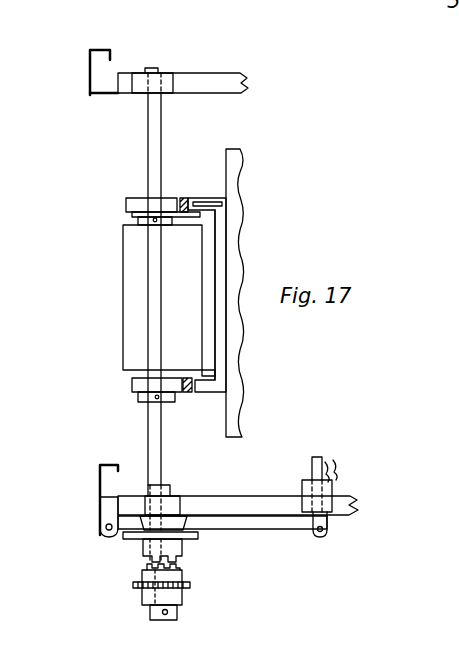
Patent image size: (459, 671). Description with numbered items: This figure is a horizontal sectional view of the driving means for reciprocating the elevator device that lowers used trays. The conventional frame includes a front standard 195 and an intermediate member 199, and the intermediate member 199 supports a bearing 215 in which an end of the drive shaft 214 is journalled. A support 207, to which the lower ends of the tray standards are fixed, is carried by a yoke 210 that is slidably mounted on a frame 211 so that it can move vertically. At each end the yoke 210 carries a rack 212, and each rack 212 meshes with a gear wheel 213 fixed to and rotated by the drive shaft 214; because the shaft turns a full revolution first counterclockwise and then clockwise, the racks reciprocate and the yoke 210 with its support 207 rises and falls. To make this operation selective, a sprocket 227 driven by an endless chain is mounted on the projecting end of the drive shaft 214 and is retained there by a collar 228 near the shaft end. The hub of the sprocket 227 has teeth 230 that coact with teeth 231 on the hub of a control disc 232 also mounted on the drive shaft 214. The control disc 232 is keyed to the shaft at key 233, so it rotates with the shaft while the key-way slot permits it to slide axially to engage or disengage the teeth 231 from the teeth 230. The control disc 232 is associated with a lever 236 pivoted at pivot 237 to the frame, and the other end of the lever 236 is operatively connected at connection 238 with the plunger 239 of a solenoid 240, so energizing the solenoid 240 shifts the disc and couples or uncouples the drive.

The front standard 195 is at (90, 63).
The intermediate member 199 is at (222, 82).
The support 207 is at (233, 237).
The yoke 210 is at (210, 195).
The frame 211 is at (212, 342).
The rack 212 is at (185, 195).
The gear wheel 213 is at (145, 197).
The drive shaft 214 is at (152, 250).
The bearing 215 is at (165, 80).
The sprocket 227 is at (143, 587).
The collar 228 is at (176, 612).
The teeth 230 is at (180, 567).
The teeth 231 is at (142, 565).
The control disc 232 is at (190, 528).
The key 233 is at (145, 546).
The lever 236 is at (262, 508).
The pivot 237 is at (95, 520).
The connection 238 is at (327, 532).
The plunger 239 is at (323, 457).
The solenoid 240 is at (335, 485).